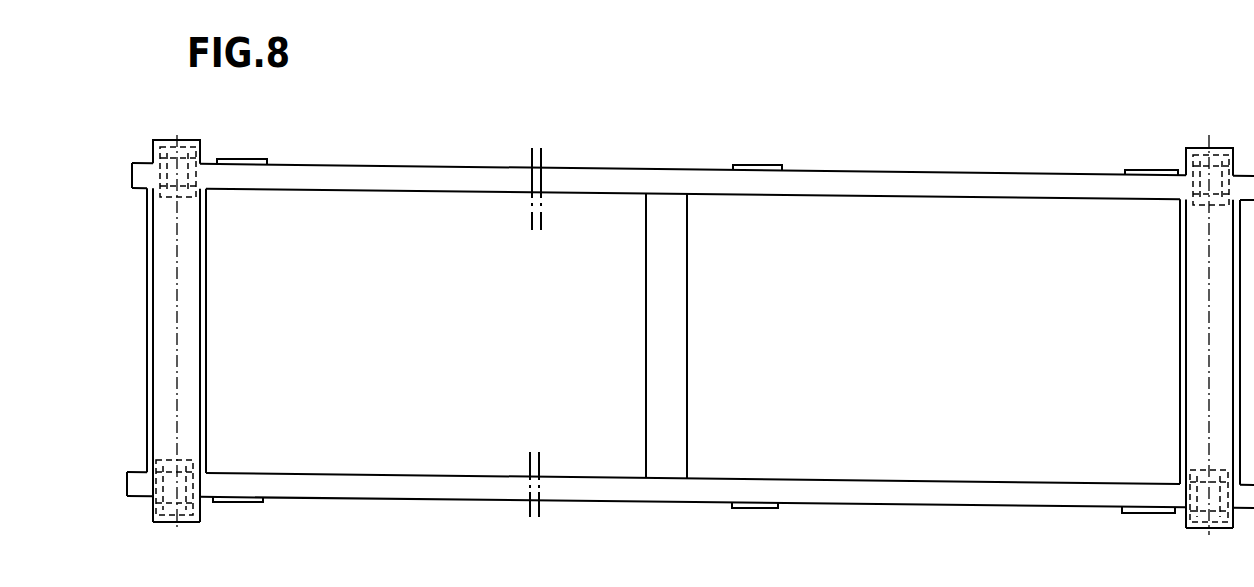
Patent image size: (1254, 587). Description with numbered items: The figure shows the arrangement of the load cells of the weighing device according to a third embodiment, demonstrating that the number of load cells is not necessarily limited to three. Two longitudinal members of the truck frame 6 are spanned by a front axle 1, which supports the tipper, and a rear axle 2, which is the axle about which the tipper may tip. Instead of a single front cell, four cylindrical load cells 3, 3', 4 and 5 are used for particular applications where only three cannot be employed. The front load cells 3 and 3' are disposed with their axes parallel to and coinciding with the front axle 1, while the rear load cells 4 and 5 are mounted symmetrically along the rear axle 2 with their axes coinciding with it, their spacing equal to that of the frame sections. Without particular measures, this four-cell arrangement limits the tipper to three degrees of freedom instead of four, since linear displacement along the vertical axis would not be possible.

The front axle 1 is at (199, 337).
The rear axle 2 is at (1188, 337).
The load cell 3 is at (193, 515).
The load cell 3' is at (205, 150).
The load cell 4 is at (1188, 523).
The load cell 5 is at (1190, 148).
The truck frame 6 is at (450, 180).